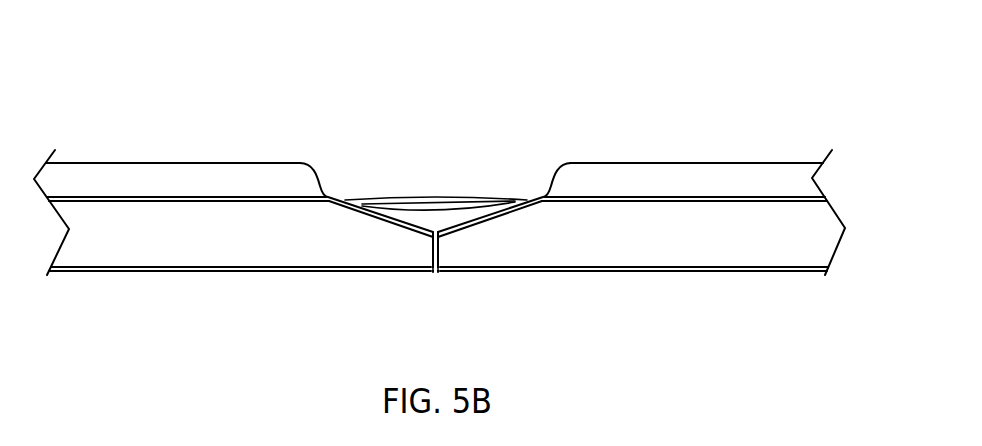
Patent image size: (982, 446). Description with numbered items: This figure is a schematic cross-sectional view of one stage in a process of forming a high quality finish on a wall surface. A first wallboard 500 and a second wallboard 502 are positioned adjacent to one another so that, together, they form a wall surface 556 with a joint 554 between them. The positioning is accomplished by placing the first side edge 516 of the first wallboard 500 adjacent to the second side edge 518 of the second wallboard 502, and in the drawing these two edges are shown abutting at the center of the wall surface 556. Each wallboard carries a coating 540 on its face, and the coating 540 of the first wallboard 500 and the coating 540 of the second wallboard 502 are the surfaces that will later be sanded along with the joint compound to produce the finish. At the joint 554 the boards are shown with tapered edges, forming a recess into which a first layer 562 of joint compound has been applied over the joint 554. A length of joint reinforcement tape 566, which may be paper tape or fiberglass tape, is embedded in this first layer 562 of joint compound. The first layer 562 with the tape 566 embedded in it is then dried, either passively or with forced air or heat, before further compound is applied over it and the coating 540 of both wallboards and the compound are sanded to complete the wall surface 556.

The first wallboard 500 is at (161, 115).
The second wallboard 502 is at (629, 115).
The coating 540 is at (437, 204).
The wall surface 556 is at (242, 163).
The first layer of joint compound 562 is at (432, 220).
The joint reinforcement tape 566 is at (459, 206).
The first side edge 516 is at (393, 301).
The second side edge 518 is at (476, 301).
The joint 554 is at (433, 297).